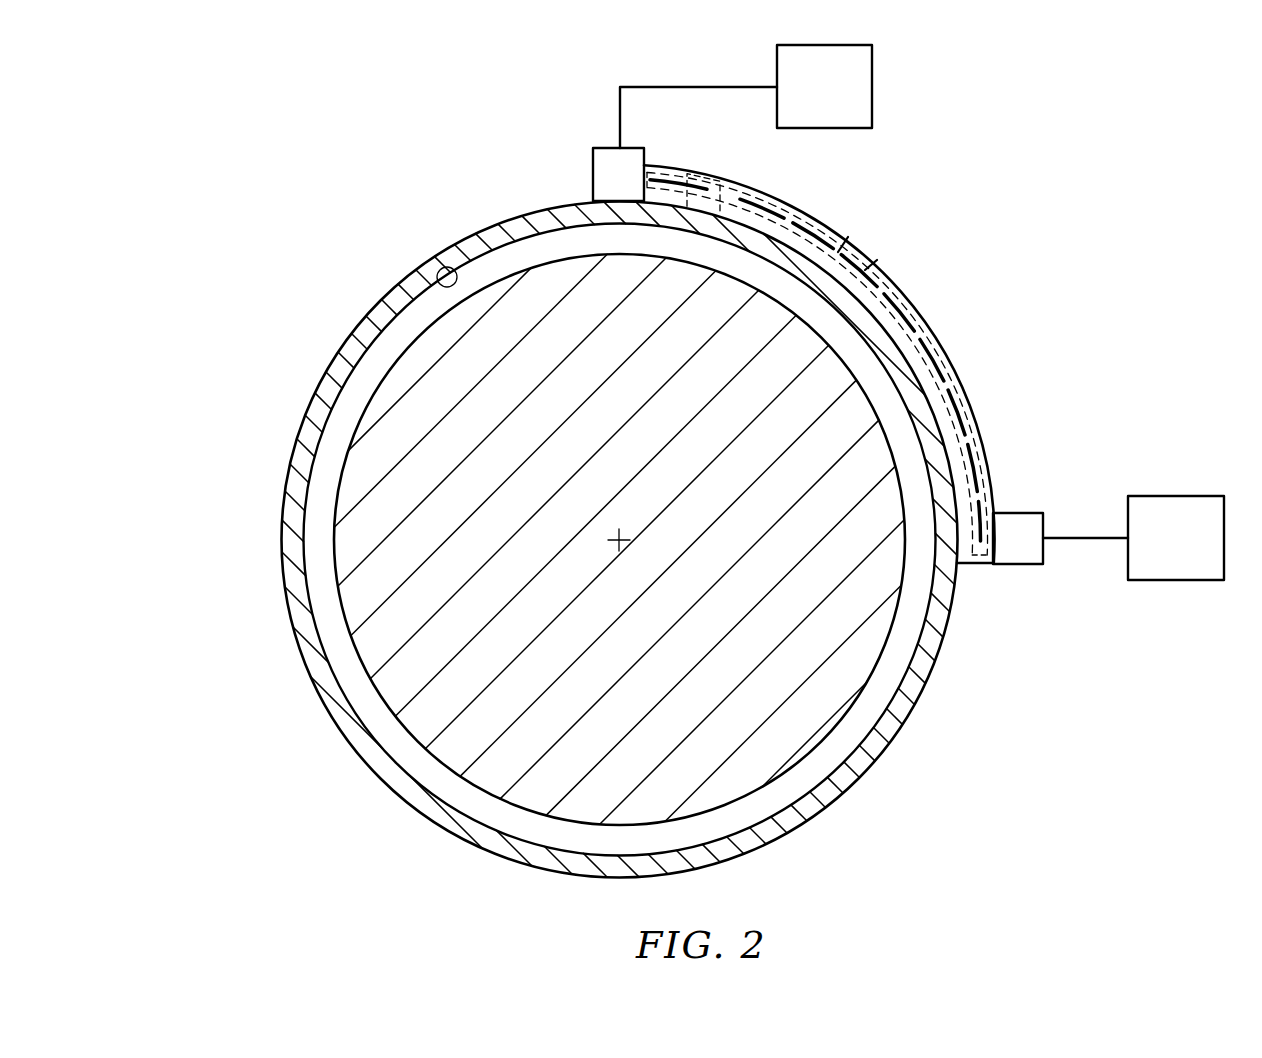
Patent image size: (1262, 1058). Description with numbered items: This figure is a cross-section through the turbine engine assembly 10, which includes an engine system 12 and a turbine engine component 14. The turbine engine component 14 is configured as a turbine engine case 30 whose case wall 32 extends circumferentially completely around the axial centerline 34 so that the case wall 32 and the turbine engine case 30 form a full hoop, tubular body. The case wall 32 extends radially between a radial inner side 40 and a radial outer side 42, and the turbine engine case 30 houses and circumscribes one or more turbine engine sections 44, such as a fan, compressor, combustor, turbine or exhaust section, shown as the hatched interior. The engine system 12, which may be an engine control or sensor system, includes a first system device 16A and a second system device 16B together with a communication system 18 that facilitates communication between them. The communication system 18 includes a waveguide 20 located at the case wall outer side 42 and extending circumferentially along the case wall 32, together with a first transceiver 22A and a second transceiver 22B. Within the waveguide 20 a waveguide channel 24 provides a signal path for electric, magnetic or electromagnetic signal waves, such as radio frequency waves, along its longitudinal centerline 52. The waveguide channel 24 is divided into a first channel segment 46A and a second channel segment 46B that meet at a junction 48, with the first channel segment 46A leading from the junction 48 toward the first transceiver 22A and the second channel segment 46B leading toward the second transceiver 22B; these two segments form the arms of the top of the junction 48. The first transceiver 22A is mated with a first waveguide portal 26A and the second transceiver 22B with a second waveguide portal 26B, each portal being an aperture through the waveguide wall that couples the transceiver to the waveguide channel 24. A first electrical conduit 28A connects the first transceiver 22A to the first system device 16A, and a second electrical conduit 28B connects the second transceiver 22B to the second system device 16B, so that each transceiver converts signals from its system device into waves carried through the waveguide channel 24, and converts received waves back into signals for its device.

The assembly 10 is at (1058, 116).
The engine system 12 is at (1030, 248).
The turbine engine component 14 is at (296, 405).
The turbine engine case 30 is at (619, 539).
The case wall 32 is at (392, 287).
The radial outer side 42 is at (460, 234).
The radial inner side 40 is at (442, 285).
The turbine engine section 44 is at (400, 745).
The axial centerline 34 is at (628, 542).
The communication system 18 is at (960, 350).
The waveguide 20 is at (970, 393).
The waveguide channel 24 is at (882, 258).
The first channel segment 46A is at (716, 182).
The second channel segment 46B is at (902, 314).
The junction 48 is at (727, 167).
The longitudinal centerline 52 is at (846, 236).
The first transceiver 22A is at (592, 175).
The second transceiver 22B is at (1010, 566).
The first waveguide portal 26A is at (663, 178).
The second waveguide portal 26B is at (993, 538).
The first electrical conduit 28A is at (643, 86).
The second electrical conduit 28B is at (1087, 540).
The first system device 16A is at (847, 102).
The second system device 16B is at (1199, 555).